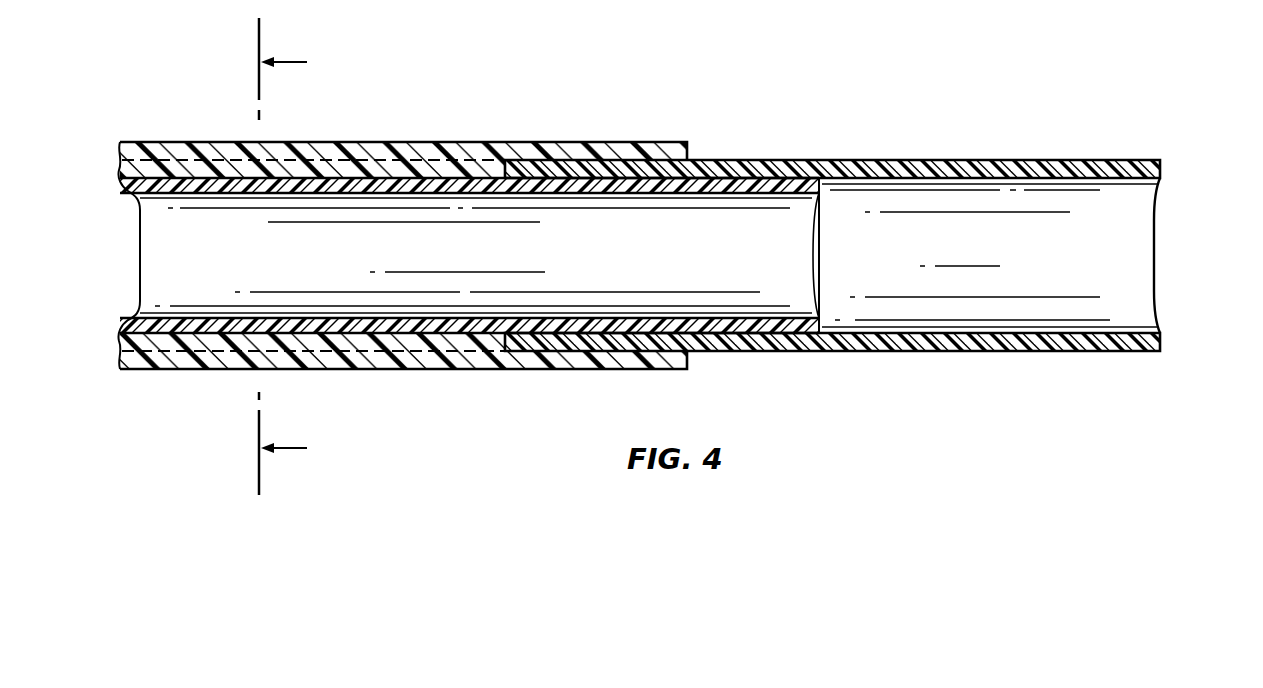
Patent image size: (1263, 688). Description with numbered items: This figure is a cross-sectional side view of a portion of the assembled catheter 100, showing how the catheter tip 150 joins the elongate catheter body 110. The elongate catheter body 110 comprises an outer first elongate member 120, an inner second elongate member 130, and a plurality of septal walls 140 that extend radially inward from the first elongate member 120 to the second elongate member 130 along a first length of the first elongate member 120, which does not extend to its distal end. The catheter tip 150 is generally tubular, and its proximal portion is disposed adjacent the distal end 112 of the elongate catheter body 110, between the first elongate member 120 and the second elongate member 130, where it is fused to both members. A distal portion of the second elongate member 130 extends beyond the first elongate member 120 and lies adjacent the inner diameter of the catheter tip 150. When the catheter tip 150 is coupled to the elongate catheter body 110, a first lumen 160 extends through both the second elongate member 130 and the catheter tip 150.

The catheter 100 is at (614, 98).
The elongate catheter body 110 is at (438, 124).
The distal end 112 is at (813, 262).
The first elongate member 120 is at (378, 148).
The second elongate member 130 is at (748, 186).
The septal walls 140 is at (421, 170).
The catheter tip 150 is at (960, 160).
The first lumen 160 is at (1166, 242).